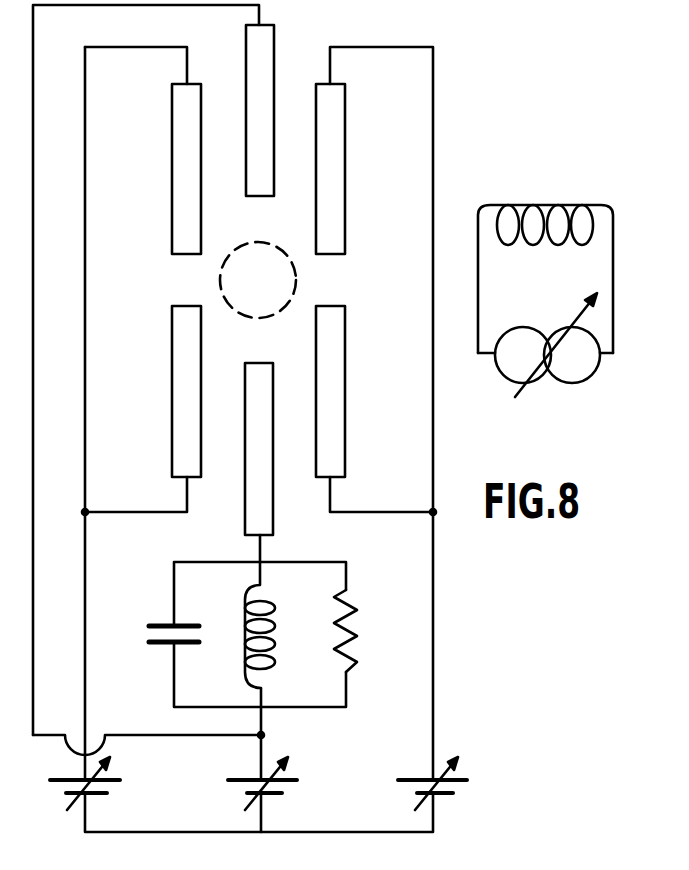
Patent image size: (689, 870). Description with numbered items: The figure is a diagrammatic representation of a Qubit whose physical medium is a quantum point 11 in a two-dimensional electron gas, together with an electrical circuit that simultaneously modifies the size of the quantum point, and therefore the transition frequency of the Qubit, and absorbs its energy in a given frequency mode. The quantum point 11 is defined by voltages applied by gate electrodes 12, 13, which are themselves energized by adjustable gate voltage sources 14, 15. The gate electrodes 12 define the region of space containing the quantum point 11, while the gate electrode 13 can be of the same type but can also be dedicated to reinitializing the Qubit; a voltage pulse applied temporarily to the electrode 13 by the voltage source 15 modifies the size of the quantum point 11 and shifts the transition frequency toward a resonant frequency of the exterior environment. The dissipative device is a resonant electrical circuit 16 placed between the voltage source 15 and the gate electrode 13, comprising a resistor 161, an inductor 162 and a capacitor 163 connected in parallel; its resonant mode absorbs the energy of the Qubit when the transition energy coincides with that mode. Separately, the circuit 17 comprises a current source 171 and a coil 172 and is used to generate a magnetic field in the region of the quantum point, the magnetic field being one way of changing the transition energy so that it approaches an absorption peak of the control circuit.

The quantum point 11 is at (268, 292).
The gate electrodes 12 is at (246, 72).
The gate electrode 13 is at (245, 410).
The adjustable gate voltage sources 14 is at (123, 780).
The adjustable gate voltage source 15 is at (300, 780).
The resonant electrical circuit 16 is at (264, 617).
The resistor 161 is at (360, 635).
The inductor 162 is at (276, 653).
The capacitor 163 is at (148, 644).
The circuit 17 is at (561, 269).
The current source 171 is at (566, 383).
The coil 172 is at (549, 206).